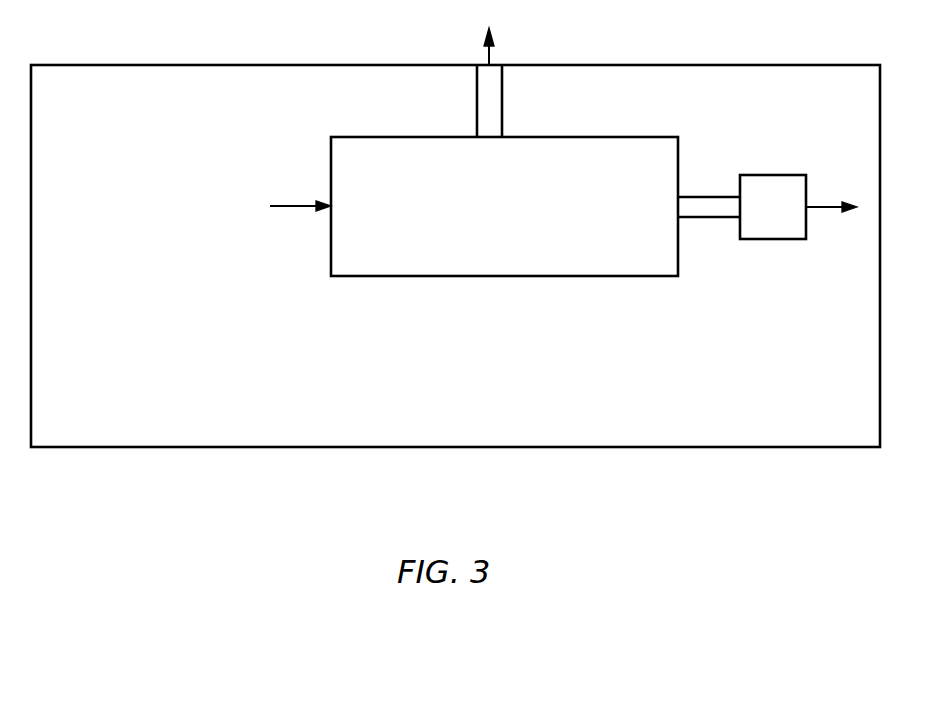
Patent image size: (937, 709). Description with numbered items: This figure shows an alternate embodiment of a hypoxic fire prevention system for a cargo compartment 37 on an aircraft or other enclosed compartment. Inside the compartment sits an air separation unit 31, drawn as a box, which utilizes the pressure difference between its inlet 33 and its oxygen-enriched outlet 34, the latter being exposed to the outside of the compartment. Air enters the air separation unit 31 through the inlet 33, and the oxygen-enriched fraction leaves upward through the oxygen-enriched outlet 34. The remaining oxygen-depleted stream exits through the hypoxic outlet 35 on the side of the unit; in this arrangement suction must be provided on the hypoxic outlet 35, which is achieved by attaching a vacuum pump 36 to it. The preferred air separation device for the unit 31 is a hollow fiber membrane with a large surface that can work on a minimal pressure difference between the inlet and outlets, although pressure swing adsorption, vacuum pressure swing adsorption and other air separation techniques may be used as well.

The air separation unit 31 is at (506, 277).
The inlet 33 is at (288, 205).
The oxygen-enriched outlet 34 is at (502, 94).
The hypoxic outlet 35 is at (709, 196).
The vacuum pump 36 is at (773, 239).
The cargo compartment 37 is at (205, 64).